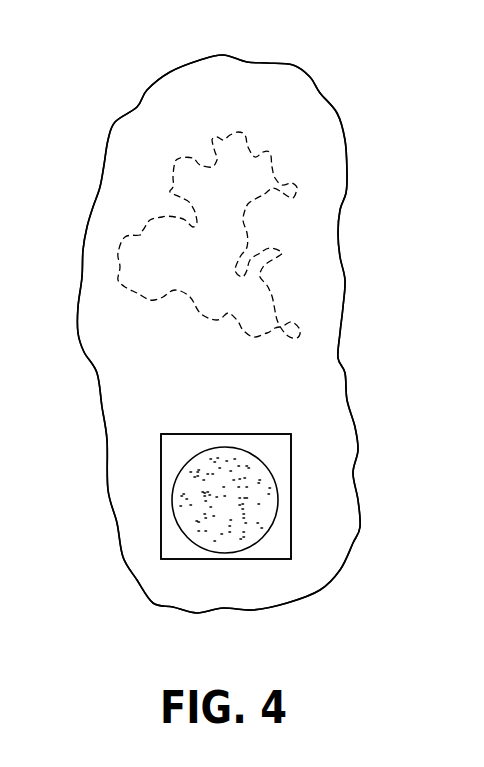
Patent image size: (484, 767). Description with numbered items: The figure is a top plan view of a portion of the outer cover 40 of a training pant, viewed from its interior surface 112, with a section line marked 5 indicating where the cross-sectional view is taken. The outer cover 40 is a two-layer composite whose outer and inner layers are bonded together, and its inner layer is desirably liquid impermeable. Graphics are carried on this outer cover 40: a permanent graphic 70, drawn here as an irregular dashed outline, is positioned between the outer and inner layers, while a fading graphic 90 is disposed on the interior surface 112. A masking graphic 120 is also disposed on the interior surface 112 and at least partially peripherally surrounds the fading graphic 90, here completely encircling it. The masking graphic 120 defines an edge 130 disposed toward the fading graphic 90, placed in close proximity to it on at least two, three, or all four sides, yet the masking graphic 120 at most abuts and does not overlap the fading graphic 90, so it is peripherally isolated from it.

The outer cover 40 is at (146, 133).
The permanent graphic 70 is at (172, 201).
The fading graphic 90 is at (173, 498).
The interior surface 112 is at (283, 452).
The masking graphic 120 is at (128, 384).
The edge 130 is at (186, 434).
The section line 5- 5 is at (237, 115).